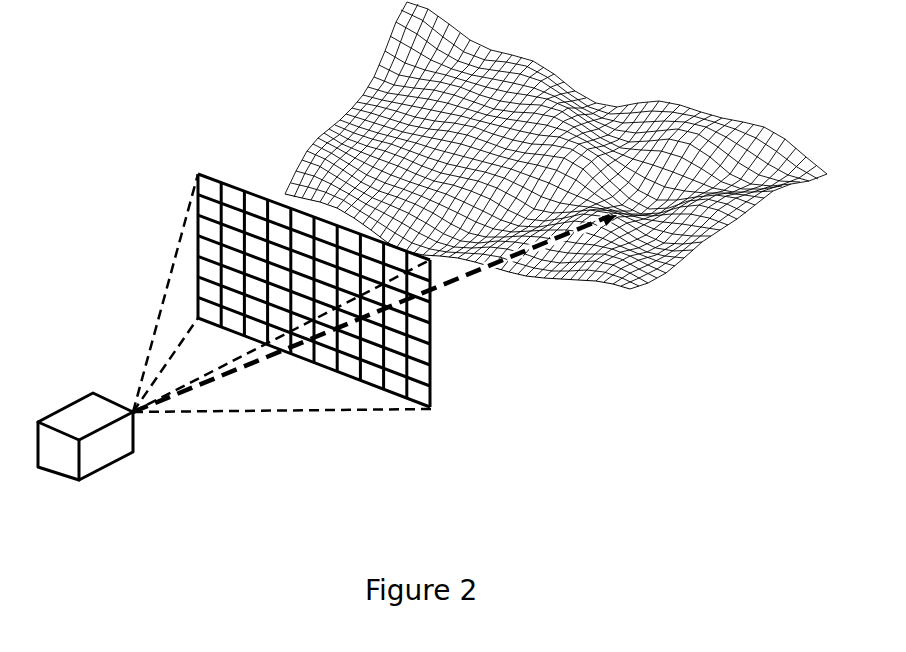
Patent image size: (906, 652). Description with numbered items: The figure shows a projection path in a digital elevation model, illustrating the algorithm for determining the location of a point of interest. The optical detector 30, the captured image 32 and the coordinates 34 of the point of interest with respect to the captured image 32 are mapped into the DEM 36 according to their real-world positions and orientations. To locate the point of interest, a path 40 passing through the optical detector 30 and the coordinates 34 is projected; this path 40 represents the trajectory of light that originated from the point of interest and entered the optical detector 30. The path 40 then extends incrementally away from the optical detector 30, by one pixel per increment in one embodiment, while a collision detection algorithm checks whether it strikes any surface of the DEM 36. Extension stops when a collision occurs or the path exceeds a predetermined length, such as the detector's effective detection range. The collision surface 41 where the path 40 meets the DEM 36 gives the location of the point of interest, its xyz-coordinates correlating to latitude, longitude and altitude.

The optical detector 30 is at (57, 463).
The captured image 32 is at (387, 390).
The coordinates of the point of interest 34 is at (373, 337).
The DEM 36 is at (373, 62).
The path 40 is at (492, 273).
The collision surface 41 is at (623, 213).